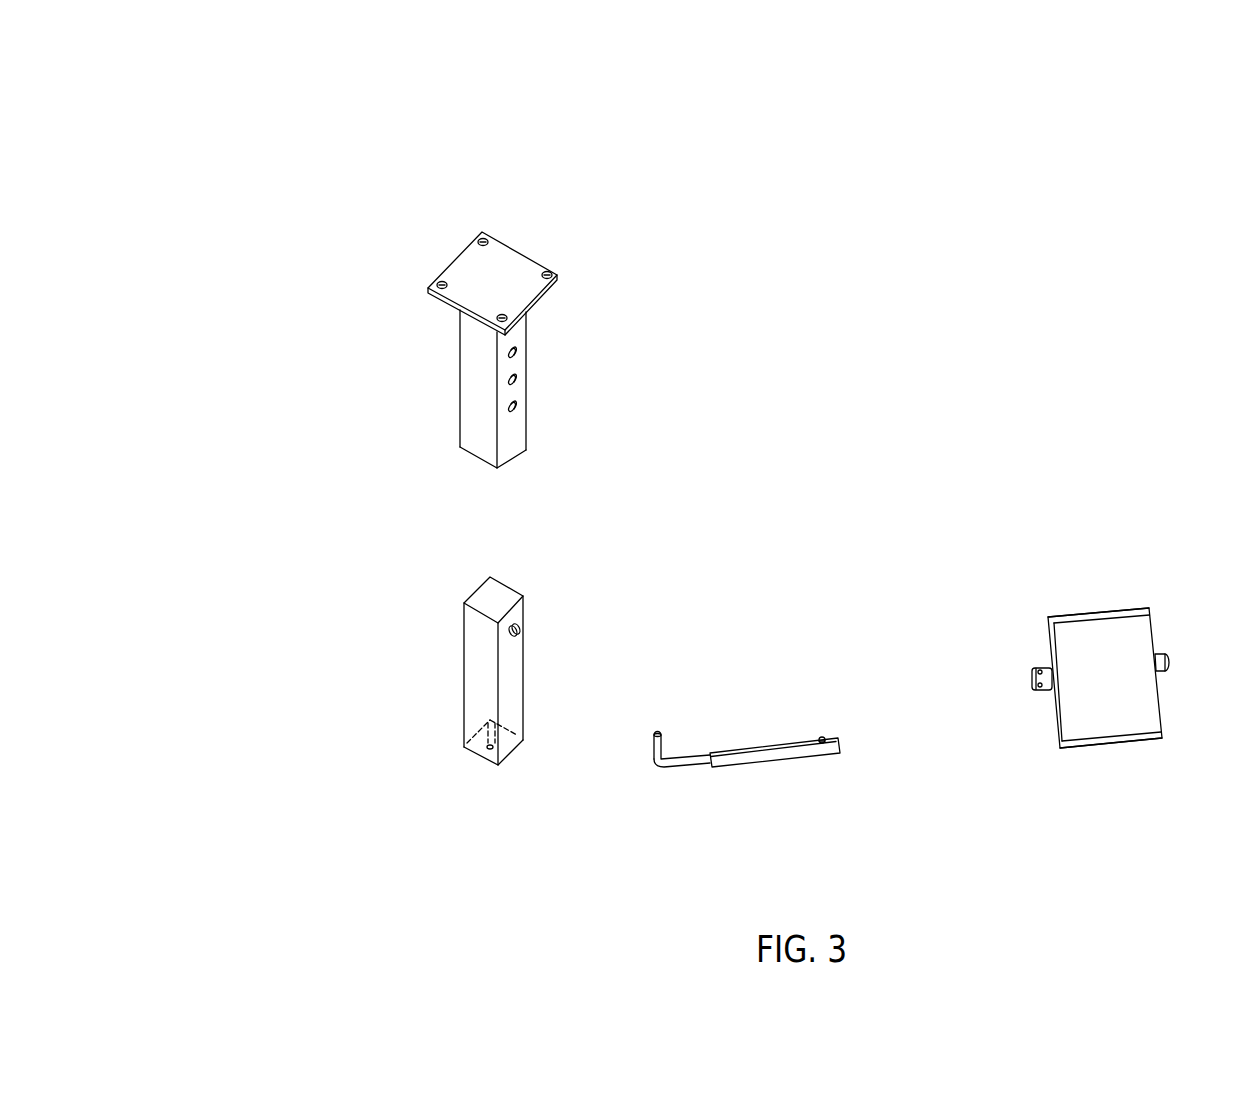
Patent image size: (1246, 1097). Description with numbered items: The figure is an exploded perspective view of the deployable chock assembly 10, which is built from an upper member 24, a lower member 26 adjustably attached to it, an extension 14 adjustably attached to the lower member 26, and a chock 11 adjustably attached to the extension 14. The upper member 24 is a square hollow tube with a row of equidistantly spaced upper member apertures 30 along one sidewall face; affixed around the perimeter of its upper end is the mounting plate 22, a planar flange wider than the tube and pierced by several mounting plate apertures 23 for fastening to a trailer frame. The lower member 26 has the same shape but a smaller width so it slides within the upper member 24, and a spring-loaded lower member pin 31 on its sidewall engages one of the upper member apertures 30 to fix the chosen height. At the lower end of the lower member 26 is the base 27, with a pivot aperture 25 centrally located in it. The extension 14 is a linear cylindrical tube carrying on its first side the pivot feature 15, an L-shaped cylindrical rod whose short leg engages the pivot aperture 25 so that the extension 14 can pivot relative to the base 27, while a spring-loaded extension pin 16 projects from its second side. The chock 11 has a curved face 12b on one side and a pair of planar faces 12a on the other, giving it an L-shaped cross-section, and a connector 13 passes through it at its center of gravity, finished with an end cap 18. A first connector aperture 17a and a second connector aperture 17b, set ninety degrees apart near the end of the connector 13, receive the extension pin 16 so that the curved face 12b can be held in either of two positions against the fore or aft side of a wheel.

The deployable chock assembly 10 is at (284, 119).
The chock 11 is at (1076, 568).
The planar face 12a is at (1120, 725).
The curved face 12b is at (1115, 612).
The connector 13 is at (1157, 678).
The extension 14 is at (755, 760).
The pivot feature 15 is at (675, 767).
The extension pin 16 is at (821, 736).
The first connector aperture 17a is at (1040, 689).
The second connector aperture 17b is at (1037, 670).
The end cap 18 is at (1170, 658).
The mounting plate 22 is at (455, 257).
The mounting plate aperture 23 is at (480, 238).
The upper member 24 is at (459, 407).
The pivot aperture 25 is at (490, 749).
The lower member 26 is at (524, 682).
The base 27 is at (478, 745).
The upper member aperture 30 is at (515, 378).
The lower member pin 31 is at (521, 627).